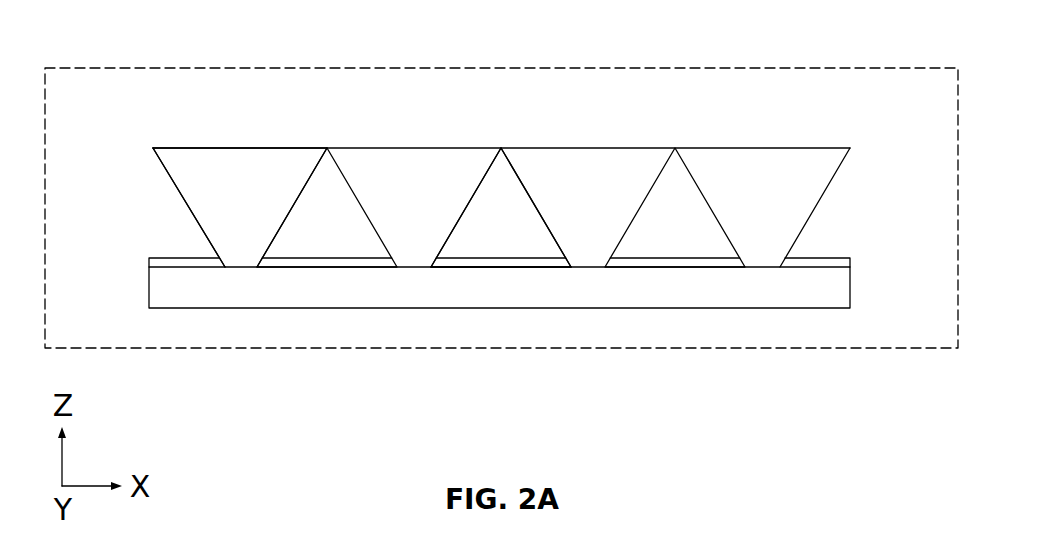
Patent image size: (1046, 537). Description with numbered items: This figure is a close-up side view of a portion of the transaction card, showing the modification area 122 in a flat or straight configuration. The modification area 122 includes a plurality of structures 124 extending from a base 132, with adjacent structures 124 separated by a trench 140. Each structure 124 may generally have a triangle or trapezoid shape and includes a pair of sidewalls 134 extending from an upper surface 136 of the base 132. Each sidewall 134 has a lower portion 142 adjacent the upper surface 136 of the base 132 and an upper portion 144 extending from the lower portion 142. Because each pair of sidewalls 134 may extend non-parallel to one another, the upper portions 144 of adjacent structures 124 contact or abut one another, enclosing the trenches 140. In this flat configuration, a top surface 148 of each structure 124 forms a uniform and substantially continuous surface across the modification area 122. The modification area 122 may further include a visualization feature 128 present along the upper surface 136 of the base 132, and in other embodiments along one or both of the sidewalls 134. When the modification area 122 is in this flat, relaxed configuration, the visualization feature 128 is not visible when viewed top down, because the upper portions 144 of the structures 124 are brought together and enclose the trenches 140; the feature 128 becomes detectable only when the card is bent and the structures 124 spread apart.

The modification area 122 is at (615, 91).
The structures 124 is at (202, 172).
The visualization feature 128 is at (832, 258).
The base 132 is at (750, 292).
The sidewalls 134 is at (168, 175).
The upper surface of the base 136 is at (312, 263).
The trench 140 is at (682, 208).
The lower portion of the sidewall 142 is at (440, 245).
The upper portion of the sidewall 144 is at (480, 185).
The top surface of the structure 148 is at (197, 148).